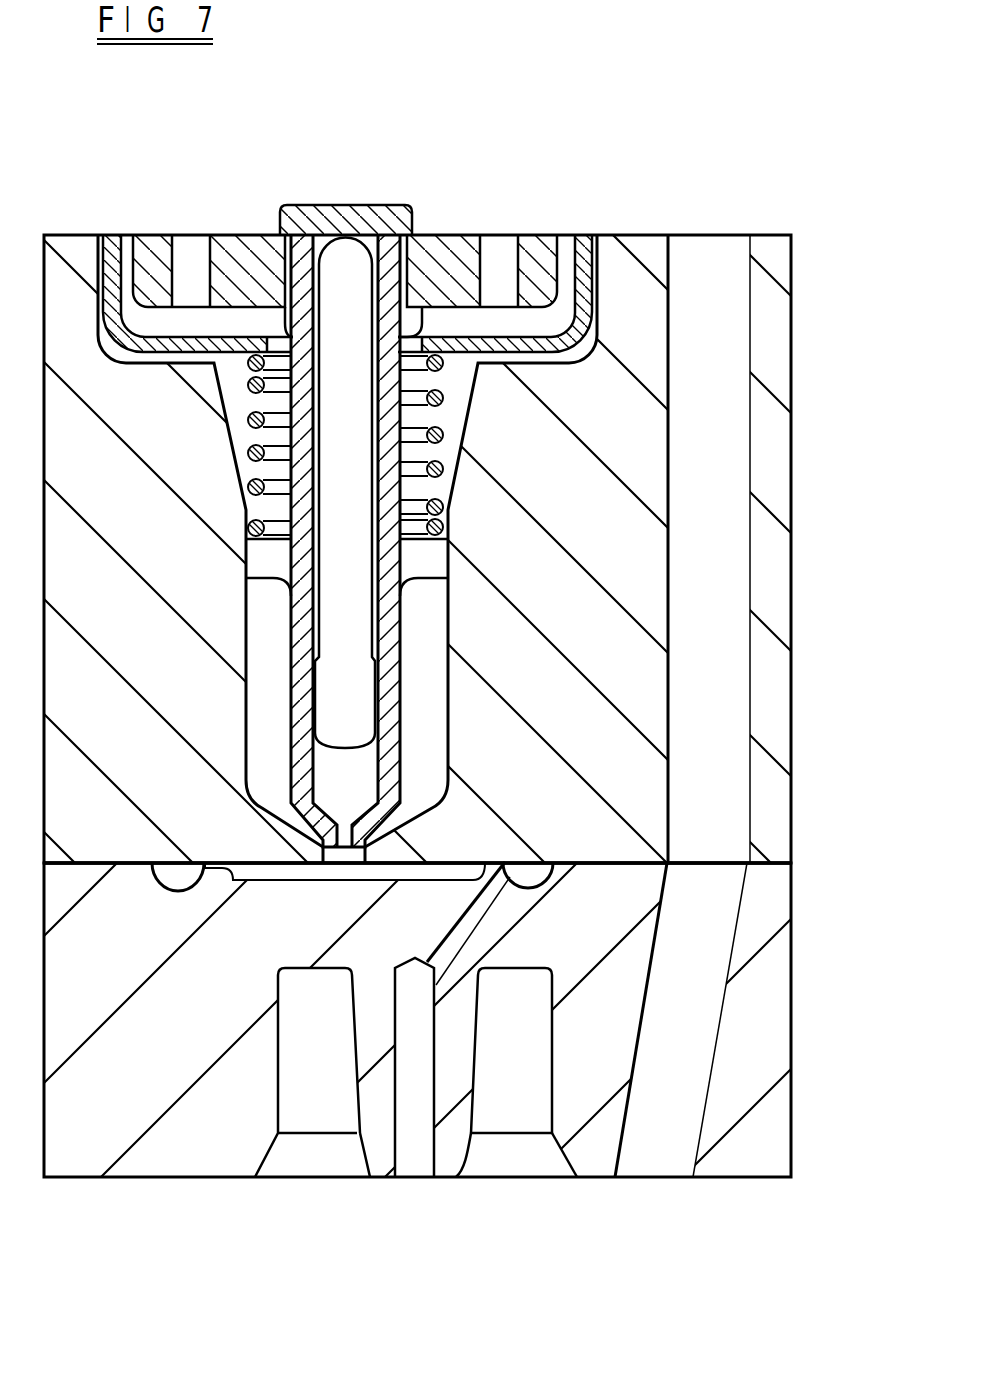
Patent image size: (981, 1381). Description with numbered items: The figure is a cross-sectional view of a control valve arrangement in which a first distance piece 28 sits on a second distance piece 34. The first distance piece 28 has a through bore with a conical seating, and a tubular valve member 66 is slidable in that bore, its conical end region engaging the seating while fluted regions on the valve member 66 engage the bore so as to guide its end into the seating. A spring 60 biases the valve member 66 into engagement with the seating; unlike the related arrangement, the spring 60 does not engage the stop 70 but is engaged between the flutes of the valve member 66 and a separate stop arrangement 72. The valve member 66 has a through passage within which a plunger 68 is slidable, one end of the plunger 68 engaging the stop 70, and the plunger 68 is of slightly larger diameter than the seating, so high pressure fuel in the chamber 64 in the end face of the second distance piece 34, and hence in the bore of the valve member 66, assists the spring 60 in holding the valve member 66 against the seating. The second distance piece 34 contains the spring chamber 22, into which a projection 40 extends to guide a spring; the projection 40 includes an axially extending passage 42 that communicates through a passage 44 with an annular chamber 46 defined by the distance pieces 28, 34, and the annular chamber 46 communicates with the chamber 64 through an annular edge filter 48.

The spring chamber 22 is at (515, 1163).
The first distance piece 28 is at (778, 560).
The second distance piece 34 is at (770, 980).
The projection 40 is at (447, 1162).
The axially extending passage 42 is at (410, 1153).
The passage 44 is at (479, 923).
The annular chamber 46 is at (537, 863).
The annular edge filter 48 is at (506, 845).
The spring 60 is at (466, 356).
The chamber 64 is at (303, 873).
The tubular valve member 66 is at (382, 558).
The plunger 68 is at (352, 492).
The stop 70 is at (386, 205).
The stop arrangement 72 is at (590, 258).